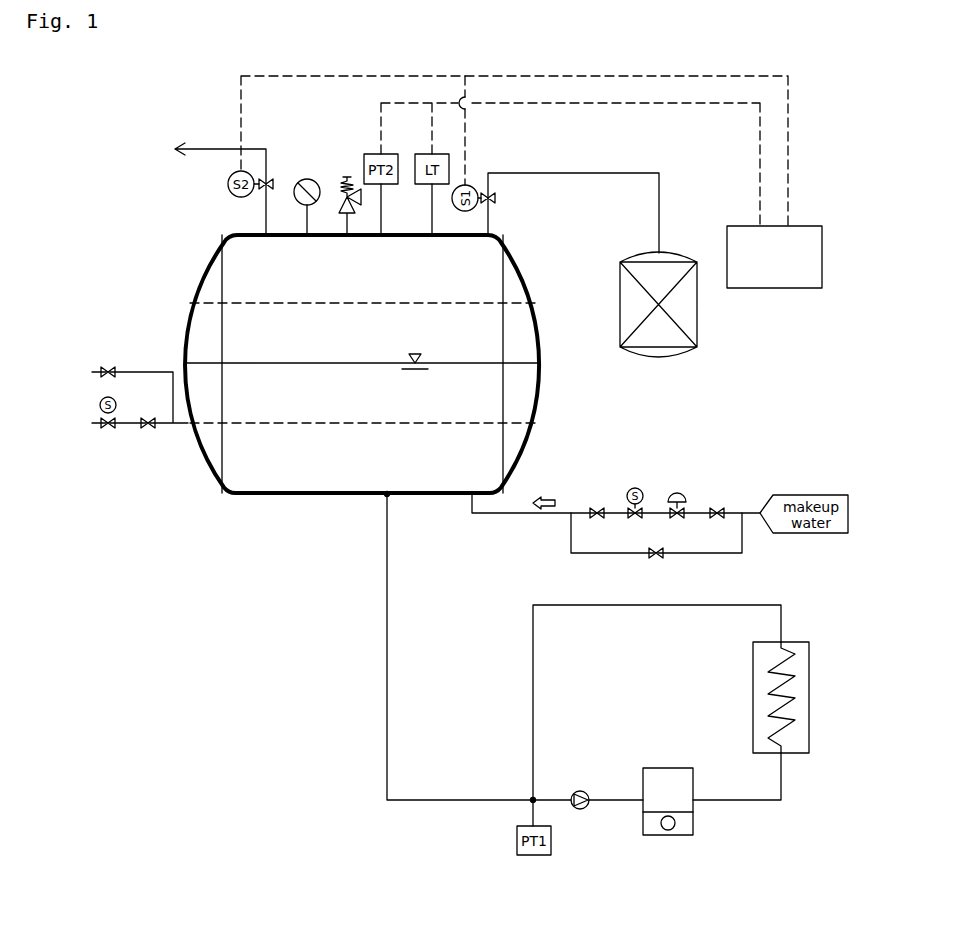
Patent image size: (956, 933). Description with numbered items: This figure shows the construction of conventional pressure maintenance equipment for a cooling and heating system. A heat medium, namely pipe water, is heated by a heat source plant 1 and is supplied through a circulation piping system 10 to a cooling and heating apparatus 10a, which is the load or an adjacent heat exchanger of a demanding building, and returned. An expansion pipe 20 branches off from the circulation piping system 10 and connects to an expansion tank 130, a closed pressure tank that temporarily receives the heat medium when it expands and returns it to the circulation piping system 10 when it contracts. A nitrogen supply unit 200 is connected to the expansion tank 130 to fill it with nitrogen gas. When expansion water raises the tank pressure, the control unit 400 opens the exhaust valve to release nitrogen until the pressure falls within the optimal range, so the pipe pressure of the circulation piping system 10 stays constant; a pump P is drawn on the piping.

The expansion tank 130 is at (545, 348).
The nitrogen supply unit 200 is at (633, 258).
The control unit 400 is at (775, 288).
The circulation piping system 10 is at (593, 605).
The cooling and heating apparatus 10a is at (798, 642).
The expansion pipe 20 is at (387, 713).
The heat source plant 1 is at (688, 820).
The pump P is at (585, 808).